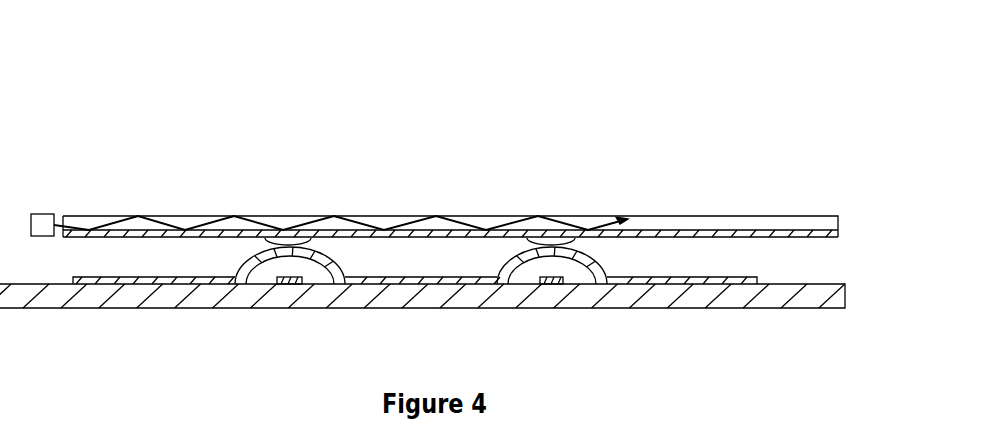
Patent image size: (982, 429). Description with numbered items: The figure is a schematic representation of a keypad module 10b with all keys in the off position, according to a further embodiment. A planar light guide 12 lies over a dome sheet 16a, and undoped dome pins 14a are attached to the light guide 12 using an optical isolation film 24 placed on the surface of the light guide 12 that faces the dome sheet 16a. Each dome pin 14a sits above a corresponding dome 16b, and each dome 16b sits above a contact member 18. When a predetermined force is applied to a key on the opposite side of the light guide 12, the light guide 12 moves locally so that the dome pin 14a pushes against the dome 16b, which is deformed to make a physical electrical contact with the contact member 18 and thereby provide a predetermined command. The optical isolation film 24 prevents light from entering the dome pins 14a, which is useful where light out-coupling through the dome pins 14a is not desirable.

The keypad module 10b is at (235, 108).
The light guide 12 is at (762, 217).
The undoped dome pin 14a is at (292, 242).
The dome sheet 16a is at (712, 278).
The dome 16b is at (590, 262).
The contact member 18 is at (278, 277).
The optical isolation film 24 is at (688, 235).